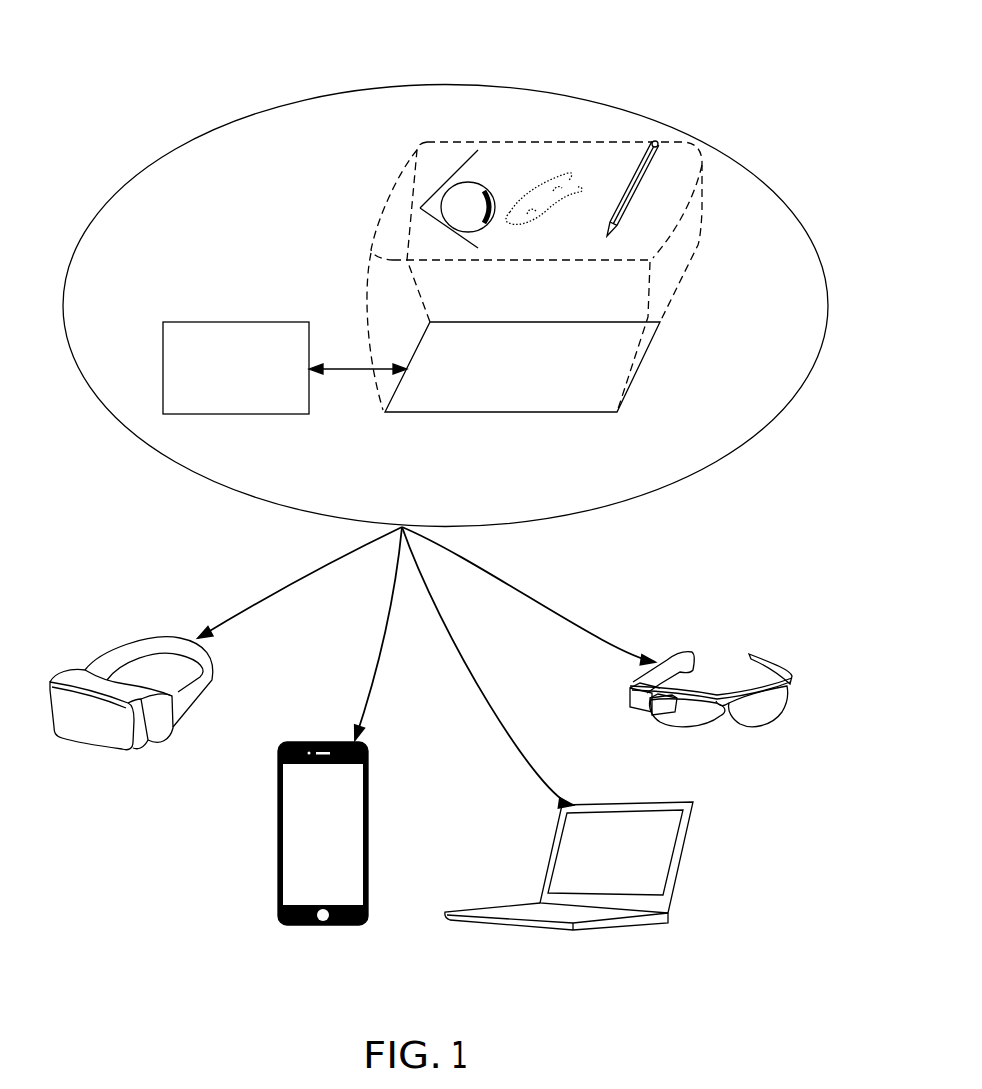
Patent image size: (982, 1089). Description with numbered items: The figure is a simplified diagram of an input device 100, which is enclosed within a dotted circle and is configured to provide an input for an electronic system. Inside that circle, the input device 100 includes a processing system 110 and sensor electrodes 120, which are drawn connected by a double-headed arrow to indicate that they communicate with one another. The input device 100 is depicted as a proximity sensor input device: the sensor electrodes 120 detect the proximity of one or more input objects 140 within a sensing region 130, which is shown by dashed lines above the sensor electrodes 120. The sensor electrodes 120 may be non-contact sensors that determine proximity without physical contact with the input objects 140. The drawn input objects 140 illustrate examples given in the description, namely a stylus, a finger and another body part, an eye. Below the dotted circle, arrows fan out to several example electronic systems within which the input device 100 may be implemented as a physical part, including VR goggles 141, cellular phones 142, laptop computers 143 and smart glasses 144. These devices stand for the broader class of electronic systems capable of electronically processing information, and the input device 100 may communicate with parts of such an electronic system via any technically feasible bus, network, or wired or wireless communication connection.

The input device 100 is at (273, 108).
The processing system 110 is at (252, 401).
The sensor electrodes 120 is at (608, 405).
The sensing region 130 is at (692, 243).
The input objects 140 is at (445, 188).
The VR goggles 141 is at (92, 746).
The cellular phones 142 is at (323, 925).
The laptop computers 143 is at (635, 925).
The smart glasses 144 is at (753, 727).